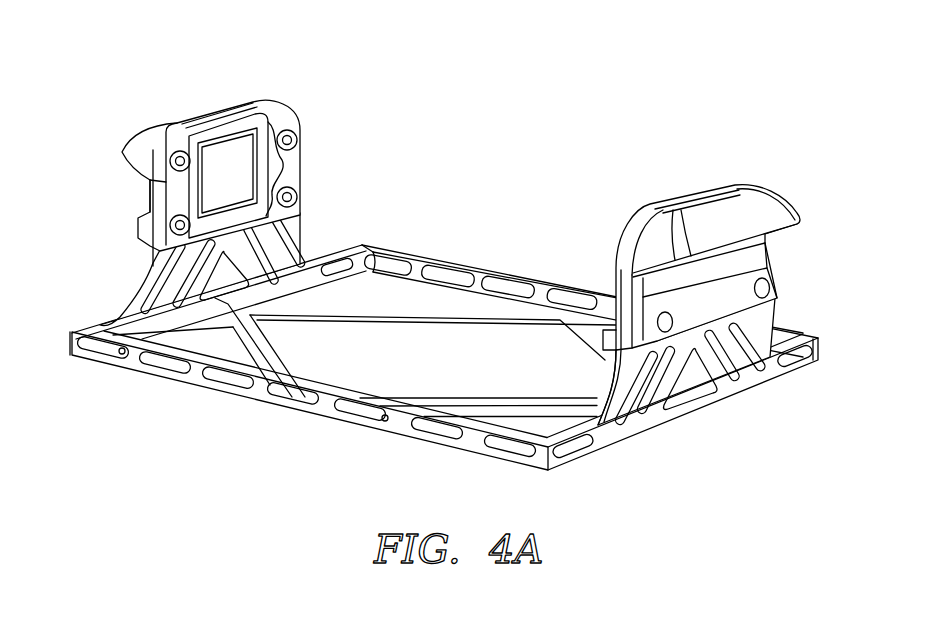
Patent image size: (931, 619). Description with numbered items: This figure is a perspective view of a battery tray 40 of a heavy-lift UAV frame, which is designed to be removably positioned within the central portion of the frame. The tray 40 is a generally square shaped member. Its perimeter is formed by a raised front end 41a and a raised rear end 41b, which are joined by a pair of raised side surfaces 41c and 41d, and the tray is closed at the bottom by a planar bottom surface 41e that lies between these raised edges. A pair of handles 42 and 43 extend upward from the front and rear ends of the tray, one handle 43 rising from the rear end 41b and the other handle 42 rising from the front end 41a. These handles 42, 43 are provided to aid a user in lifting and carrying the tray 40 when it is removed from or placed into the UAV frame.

The battery tray 40 is at (432, 241).
The raised front end 41a is at (630, 430).
The raised rear end 41b is at (110, 320).
The raised side surface 41c is at (328, 411).
The raised side surface 41d is at (424, 258).
The planar bottom surface 41e is at (263, 350).
The handle 42 is at (708, 190).
The handle 43 is at (210, 117).